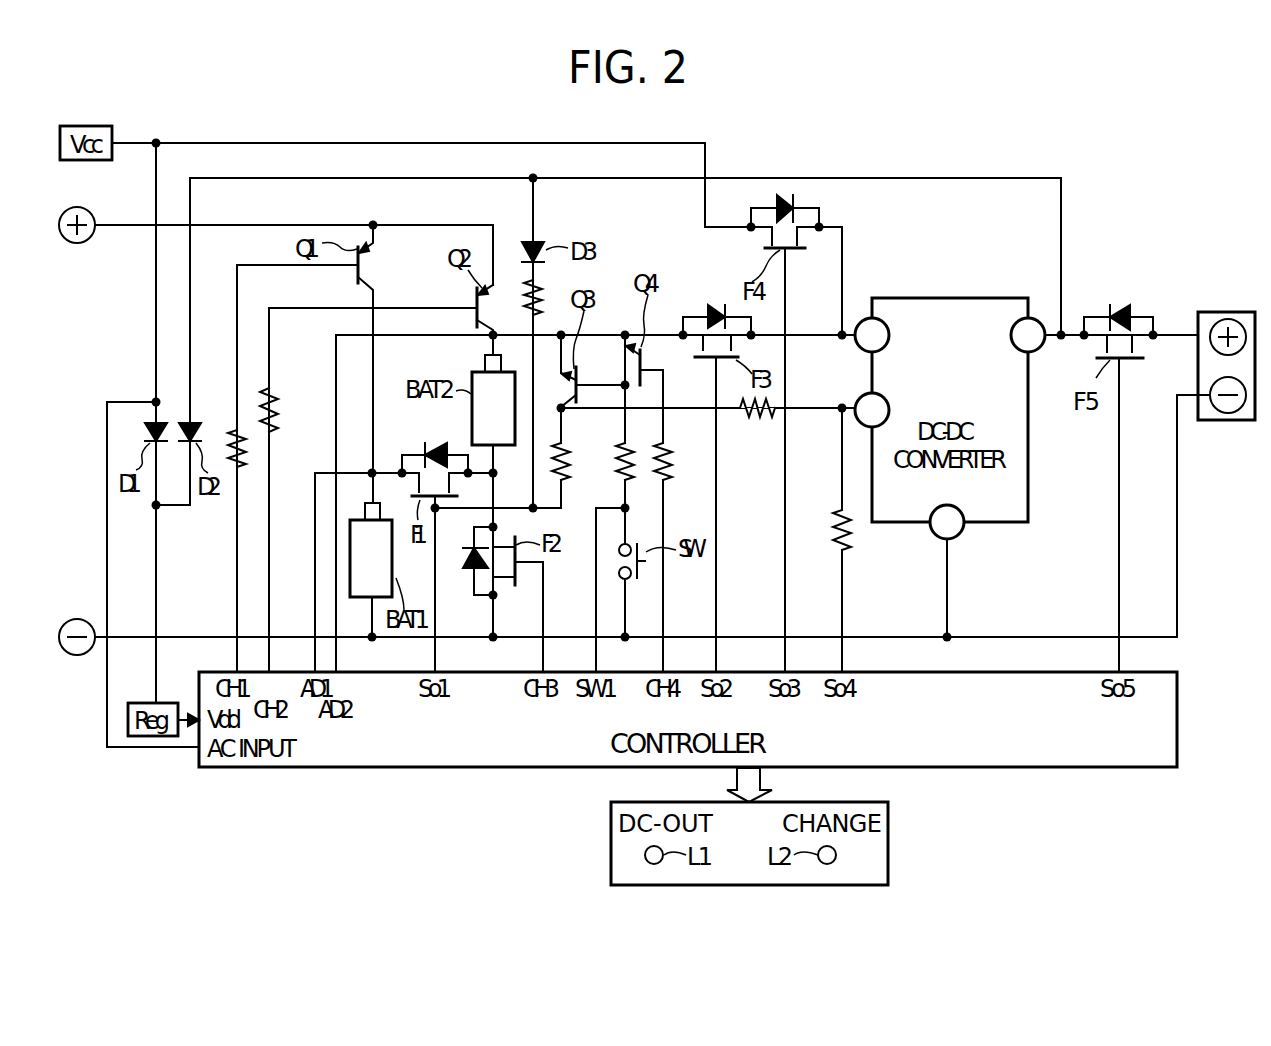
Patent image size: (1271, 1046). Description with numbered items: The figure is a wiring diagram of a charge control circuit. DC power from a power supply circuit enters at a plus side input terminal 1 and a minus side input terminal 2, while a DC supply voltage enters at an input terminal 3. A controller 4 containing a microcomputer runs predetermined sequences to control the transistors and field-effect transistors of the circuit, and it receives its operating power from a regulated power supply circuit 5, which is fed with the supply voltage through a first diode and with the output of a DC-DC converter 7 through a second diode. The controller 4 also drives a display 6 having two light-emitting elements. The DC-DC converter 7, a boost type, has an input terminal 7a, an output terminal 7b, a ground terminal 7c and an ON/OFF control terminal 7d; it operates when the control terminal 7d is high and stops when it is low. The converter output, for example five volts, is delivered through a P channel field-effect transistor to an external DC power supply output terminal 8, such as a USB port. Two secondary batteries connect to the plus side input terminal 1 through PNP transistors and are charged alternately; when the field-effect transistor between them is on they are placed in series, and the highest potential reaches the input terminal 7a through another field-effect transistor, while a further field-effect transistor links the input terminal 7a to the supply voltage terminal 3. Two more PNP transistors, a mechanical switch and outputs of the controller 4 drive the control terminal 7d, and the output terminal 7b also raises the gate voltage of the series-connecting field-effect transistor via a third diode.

The plus side input terminal 1 is at (77, 244).
The minus side input terminal 2 is at (77, 656).
The input terminal 3 is at (107, 125).
The controller 4 is at (486, 769).
The regulated power supply circuit 5 is at (137, 703).
The display 6 is at (889, 838).
The DC-DC converter 7 is at (940, 298).
The input terminal 7a is at (868, 318).
The output terminal 7b is at (1036, 318).
The ground terminal 7c is at (959, 535).
The ON/OFF control terminal 7d is at (859, 399).
The external DC power supply output terminal 8 is at (1228, 311).